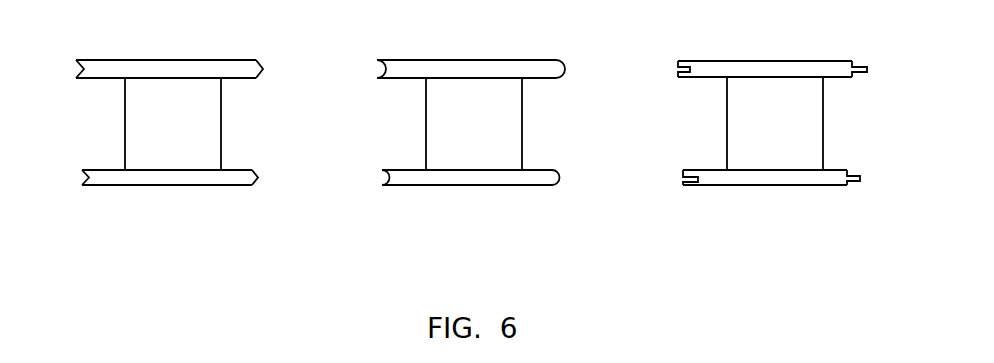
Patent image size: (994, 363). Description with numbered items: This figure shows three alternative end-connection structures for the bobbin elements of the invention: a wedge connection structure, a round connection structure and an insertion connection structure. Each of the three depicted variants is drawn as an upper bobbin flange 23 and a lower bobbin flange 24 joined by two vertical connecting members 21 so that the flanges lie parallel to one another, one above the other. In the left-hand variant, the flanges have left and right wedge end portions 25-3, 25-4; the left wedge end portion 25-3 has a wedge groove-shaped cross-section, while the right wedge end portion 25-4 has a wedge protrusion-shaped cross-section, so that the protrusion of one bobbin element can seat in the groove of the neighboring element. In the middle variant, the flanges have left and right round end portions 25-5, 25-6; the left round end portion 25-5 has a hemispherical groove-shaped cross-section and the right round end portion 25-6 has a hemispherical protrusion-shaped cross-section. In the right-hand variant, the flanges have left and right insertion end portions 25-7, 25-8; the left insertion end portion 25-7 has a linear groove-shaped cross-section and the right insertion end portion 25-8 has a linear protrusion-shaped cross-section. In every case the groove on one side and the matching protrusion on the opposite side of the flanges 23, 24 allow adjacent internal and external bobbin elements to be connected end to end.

The connecting portion 21 is at (213, 122).
The upper bobbin flange 23 is at (165, 68).
The lower bobbin flange 24 is at (170, 178).
The left wedge end portion 25-3 is at (78, 60).
The right wedge end portion 25-4 is at (258, 60).
The left round end portion 25-5 is at (383, 60).
The right round end portion 25-6 is at (560, 60).
The left insertion end portion 25-7 is at (683, 61).
The right insertion end portion 25-8 is at (862, 61).